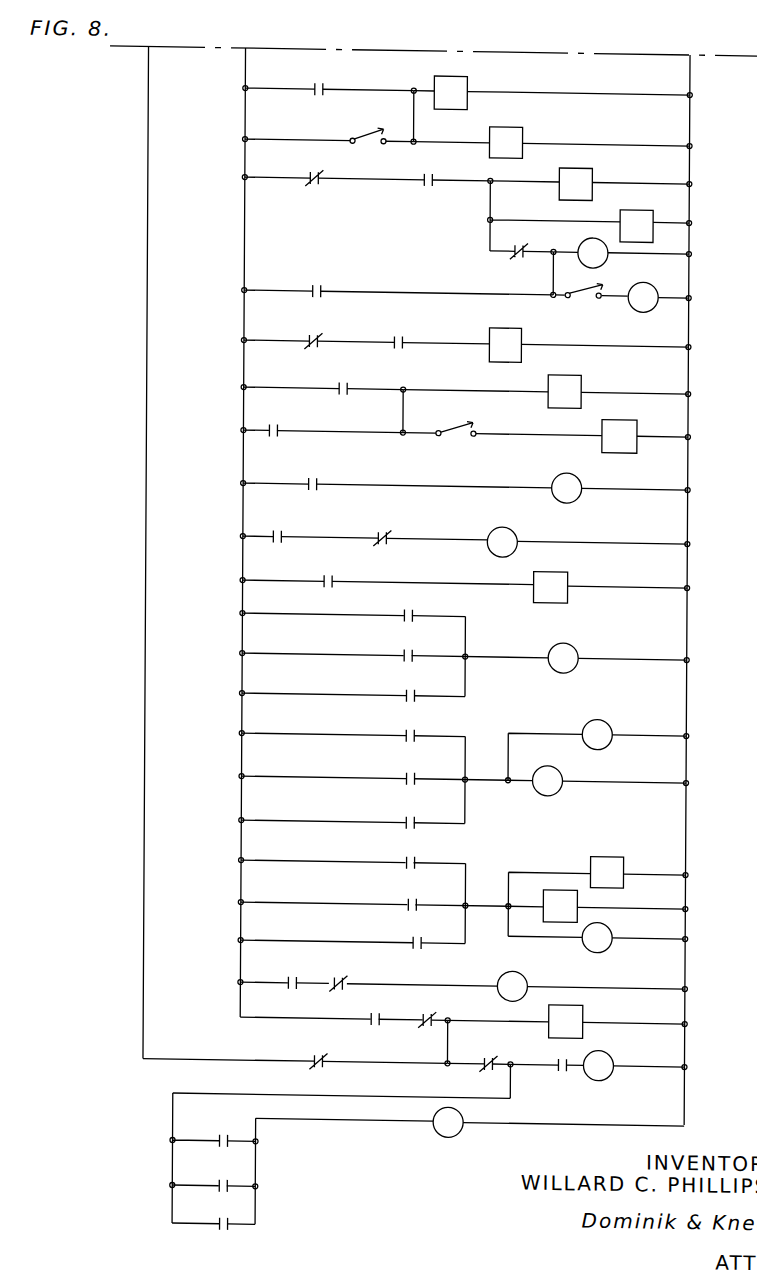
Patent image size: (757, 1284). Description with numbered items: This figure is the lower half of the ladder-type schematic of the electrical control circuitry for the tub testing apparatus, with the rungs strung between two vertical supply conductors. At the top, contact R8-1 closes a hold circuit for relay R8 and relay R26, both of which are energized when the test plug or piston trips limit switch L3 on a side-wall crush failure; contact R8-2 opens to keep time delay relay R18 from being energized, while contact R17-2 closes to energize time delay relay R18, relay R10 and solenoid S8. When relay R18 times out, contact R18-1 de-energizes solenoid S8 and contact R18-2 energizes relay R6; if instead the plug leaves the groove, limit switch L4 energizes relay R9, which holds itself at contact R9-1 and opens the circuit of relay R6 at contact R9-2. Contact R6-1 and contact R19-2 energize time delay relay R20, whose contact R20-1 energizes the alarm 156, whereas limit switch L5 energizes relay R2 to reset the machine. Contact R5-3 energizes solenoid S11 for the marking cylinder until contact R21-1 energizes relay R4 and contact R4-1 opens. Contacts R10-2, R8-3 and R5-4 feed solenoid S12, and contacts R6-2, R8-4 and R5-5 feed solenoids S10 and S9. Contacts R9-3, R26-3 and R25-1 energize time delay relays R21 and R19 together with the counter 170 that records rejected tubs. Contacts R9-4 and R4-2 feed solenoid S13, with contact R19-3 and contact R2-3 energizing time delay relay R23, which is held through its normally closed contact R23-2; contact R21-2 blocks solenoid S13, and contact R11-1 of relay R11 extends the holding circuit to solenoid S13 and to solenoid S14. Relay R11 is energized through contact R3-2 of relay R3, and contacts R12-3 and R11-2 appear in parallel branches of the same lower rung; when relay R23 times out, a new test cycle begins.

The contact R8-1 of relay R8 R8-1 is at (314, 80).
The relay R26 is at (457, 89).
The limit switch L3 is at (359, 128).
The relay R8 is at (509, 144).
The contact R8-2 of relay R8 R8-2 is at (307, 168).
The contact R17-2 of time delay relay R17 R17-2 is at (424, 169).
The time delay relay R18 is at (581, 181).
The relay R10 is at (656, 217).
The contact R18-1 of time delay relay R18 R18-1 is at (514, 258).
The solenoid S8 is at (598, 256).
The contact R9-1 of relay R9 R9-1 is at (308, 277).
The limit switch L4 is at (576, 296).
The relay R9 is at (655, 302).
The contact R9-2 of relay R9 R9-2 is at (307, 326).
The contact R18-2 of time delay relay R18 R18-2 is at (394, 327).
The relay R6 is at (496, 332).
The contact R19-2 of time delay relay R19 R19-2 is at (336, 375).
The time delay relay R20 is at (566, 391).
The contact R6-1 of relay R6 R6-1 is at (281, 405).
The limit switch L5 is at (458, 422).
The relay R2 is at (632, 418).
The contact R20-1 of time delay relay R20 R20-1 is at (308, 478).
The alarm 156 is at (580, 482).
The contact R5-3 of relay R5 R5-3 is at (277, 532).
The contact R4-1 of relay R4 R4-1 is at (384, 531).
The solenoid S11 is at (515, 534).
The contact R21-1 of time delay relay R21 R21-1 is at (324, 575).
The relay R4 is at (568, 576).
The contact R10-2 of relay R10 R10-2 is at (415, 608).
The contact R8-3 of relay R8 R8-3 is at (406, 650).
The solenoid S12 is at (572, 652).
The contact R5-4 of relay R5 R5-4 is at (405, 688).
The contact R6-2 of relay R6 R6-2 is at (408, 730).
The solenoid S10 is at (592, 722).
The contact R8-4 of relay R8 R8-4 is at (410, 772).
The solenoid S9 is at (558, 776).
The contact R5-5 of relay R5 R5-5 is at (402, 816).
The contact R9-3 of relay R9 R9-3 is at (402, 858).
The time delay relay R21 is at (608, 864).
The contact R26-3 of relay R26 R26-3 is at (408, 900).
The time delay relay R19 is at (548, 892).
The contact R25-1 of relay R25 R25-1 is at (408, 938).
The counter 170 is at (610, 944).
The contact R9-4 of relay R9 R9-4 is at (290, 972).
The contact R4-2 of relay R4 R4-2 is at (340, 968).
The solenoid S13 is at (512, 970).
The contact R19-3 of time delay relay R19 R19-3 is at (378, 1025).
The contact R2-3 of relay R2 R2-3 is at (432, 1008).
The time delay relay R23 is at (582, 1020).
The contact R23-2 of time delay relay R23 R23-2 is at (295, 1052).
The contact R21-2 of time delay relay R21 R21-2 is at (484, 1064).
The contact R11-1 of relay R11 R11-1 is at (567, 1068).
The solenoid S14 is at (610, 1050).
The relay R11 is at (445, 1133).
The contact R3-2 of relay R3 R3-2 is at (223, 1135).
The contact R12-3 of relay R12 R12-3 is at (223, 1180).
The contact R11-2 of relay R11 R11-2 is at (218, 1232).